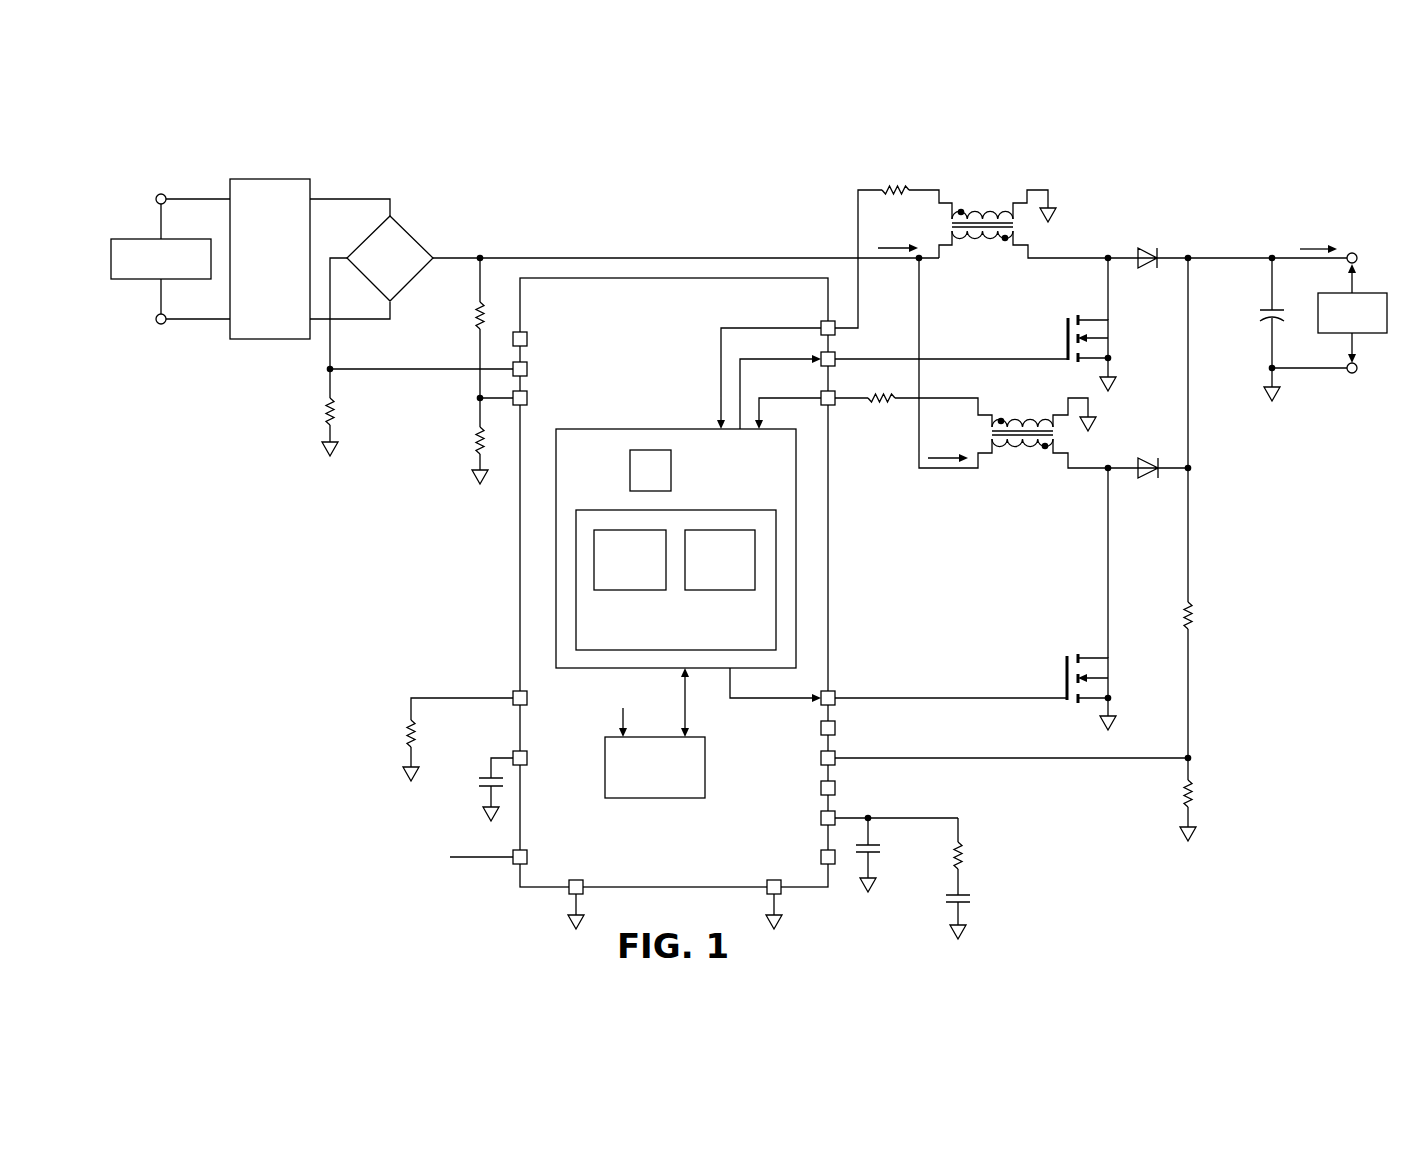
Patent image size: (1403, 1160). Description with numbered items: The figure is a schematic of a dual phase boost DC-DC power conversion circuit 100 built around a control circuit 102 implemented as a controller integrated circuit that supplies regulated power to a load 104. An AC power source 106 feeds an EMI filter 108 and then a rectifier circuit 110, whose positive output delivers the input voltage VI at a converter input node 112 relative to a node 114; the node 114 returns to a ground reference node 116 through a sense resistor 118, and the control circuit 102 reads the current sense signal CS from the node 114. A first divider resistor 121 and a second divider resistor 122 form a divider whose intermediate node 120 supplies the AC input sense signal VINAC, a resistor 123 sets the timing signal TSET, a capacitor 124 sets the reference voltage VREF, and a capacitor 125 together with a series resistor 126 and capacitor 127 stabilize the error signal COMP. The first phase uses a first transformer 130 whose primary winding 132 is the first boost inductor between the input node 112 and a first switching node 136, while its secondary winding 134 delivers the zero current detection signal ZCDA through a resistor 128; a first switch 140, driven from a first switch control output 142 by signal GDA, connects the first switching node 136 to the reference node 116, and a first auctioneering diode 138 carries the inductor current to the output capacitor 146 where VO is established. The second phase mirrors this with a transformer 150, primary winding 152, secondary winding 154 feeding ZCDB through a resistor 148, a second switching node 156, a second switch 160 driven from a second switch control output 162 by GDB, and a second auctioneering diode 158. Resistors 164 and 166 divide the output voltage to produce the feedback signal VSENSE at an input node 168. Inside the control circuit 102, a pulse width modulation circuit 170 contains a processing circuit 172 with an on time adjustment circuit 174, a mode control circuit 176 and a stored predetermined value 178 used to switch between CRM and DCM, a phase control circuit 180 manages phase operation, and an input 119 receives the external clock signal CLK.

The power conversion circuit 100 is at (1246, 184).
The control circuit 102 is at (659, 346).
The load 104 is at (1374, 293).
The AC power source 106 is at (140, 238).
The EMI filter 108 is at (270, 179).
The rectifier circuit 110 is at (415, 235).
The converter input node 112 is at (585, 258).
The node 114 is at (330, 348).
The ground reference node 116 is at (1275, 397).
The sense resistor 118 is at (327, 405).
The input 119 is at (480, 861).
The node 120 is at (478, 386).
The first divider resistor 121 is at (478, 313).
The second divider resistor 122 is at (478, 438).
The resistor 123 is at (407, 733).
The capacitor 124 is at (485, 783).
The capacitor 125 is at (880, 847).
The resistor 126 is at (965, 856).
The capacitor 127 is at (970, 898).
The resistor 128 is at (893, 185).
The first transformer 130 is at (1010, 180).
The primary winding 132 is at (975, 240).
The secondary winding 134 is at (990, 211).
The first switching node 136 is at (1110, 299).
The first auctioneering diode 138 is at (1149, 251).
The first switch 140 is at (1066, 331).
The first switch control output 142 is at (958, 358).
The output capacitor 146 is at (1268, 313).
The resistor 148 is at (882, 405).
The transformer 150 is at (1021, 479).
The primary winding 152 is at (1001, 452).
The secondary winding 154 is at (1031, 420).
The second switching node 156 is at (1090, 471).
The second auctioneering diode 158 is at (1149, 476).
The second switch 160 is at (1066, 669).
The second switch control output 162 is at (948, 697).
The resistor 164 is at (1192, 614).
The resistor 166 is at (1192, 794).
The input node 168 is at (1012, 760).
The pulse width modulation circuit 170 is at (628, 420).
The processing circuit 172 is at (750, 501).
The on time adjustment circuit 174 is at (630, 590).
The mode control circuit 176 is at (722, 590).
The predetermined value 178 is at (630, 471).
The phase control circuit 180 is at (652, 798).